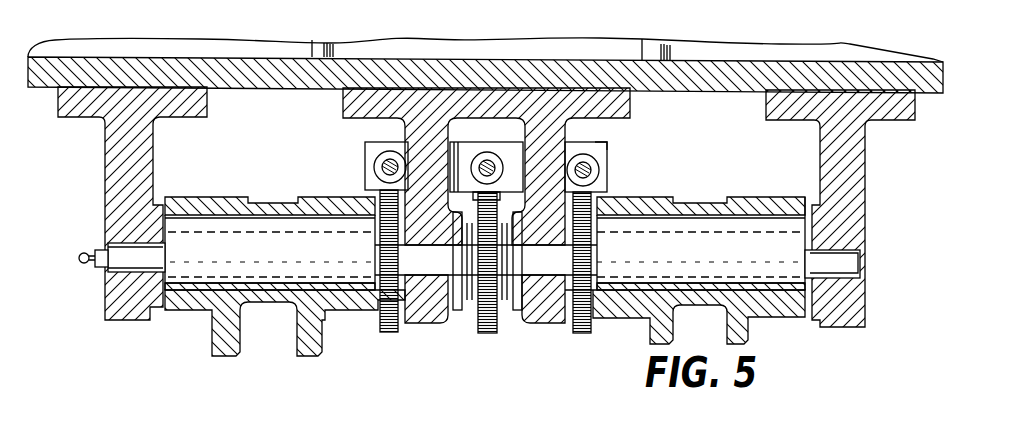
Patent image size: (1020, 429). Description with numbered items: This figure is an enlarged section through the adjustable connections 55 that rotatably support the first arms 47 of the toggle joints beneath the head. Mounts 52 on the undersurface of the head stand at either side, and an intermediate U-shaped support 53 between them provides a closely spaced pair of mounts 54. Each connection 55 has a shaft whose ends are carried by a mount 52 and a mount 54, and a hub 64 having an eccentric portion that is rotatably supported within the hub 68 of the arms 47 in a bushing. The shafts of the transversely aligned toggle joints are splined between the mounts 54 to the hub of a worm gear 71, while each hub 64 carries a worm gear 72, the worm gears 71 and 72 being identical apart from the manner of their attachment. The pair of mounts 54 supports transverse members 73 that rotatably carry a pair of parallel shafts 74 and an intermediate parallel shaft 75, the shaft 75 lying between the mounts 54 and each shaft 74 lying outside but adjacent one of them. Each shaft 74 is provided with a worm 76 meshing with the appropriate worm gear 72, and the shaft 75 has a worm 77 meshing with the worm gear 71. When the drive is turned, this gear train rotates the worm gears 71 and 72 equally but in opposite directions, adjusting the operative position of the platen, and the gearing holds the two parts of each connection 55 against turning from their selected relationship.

The first arms 47 is at (312, 358).
The mounts 52 is at (143, 147).
The intermediate U-shaped support 53 is at (623, 106).
The mounts 54 is at (440, 318).
The connection 55 is at (221, 264).
The hub 64 is at (363, 308).
The hub of the arms 68 is at (765, 183).
The worm gear 71 is at (487, 334).
The worm gear 72 is at (392, 331).
The transverse members 73 is at (601, 146).
The parallel shafts 74 is at (388, 151).
The intermediate parallel shaft 75 is at (487, 158).
The worm 76 is at (374, 166).
The worm 77 is at (500, 158).